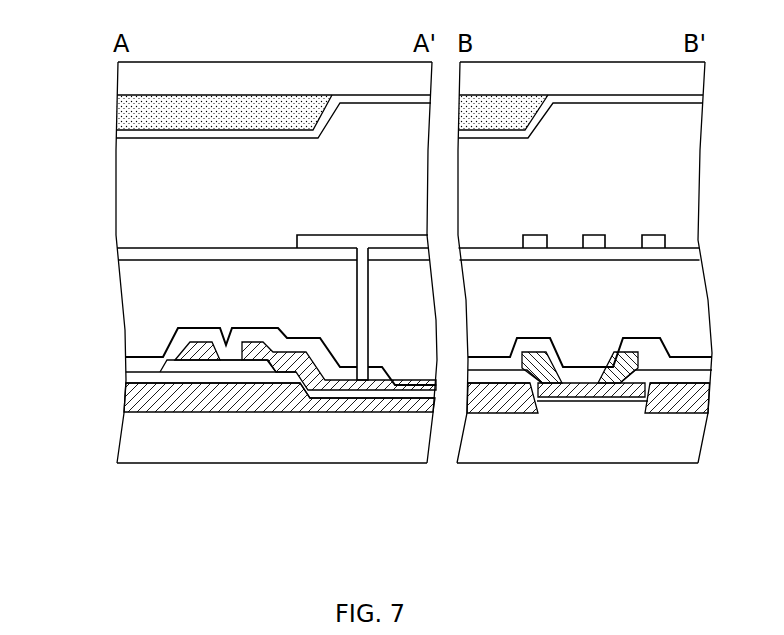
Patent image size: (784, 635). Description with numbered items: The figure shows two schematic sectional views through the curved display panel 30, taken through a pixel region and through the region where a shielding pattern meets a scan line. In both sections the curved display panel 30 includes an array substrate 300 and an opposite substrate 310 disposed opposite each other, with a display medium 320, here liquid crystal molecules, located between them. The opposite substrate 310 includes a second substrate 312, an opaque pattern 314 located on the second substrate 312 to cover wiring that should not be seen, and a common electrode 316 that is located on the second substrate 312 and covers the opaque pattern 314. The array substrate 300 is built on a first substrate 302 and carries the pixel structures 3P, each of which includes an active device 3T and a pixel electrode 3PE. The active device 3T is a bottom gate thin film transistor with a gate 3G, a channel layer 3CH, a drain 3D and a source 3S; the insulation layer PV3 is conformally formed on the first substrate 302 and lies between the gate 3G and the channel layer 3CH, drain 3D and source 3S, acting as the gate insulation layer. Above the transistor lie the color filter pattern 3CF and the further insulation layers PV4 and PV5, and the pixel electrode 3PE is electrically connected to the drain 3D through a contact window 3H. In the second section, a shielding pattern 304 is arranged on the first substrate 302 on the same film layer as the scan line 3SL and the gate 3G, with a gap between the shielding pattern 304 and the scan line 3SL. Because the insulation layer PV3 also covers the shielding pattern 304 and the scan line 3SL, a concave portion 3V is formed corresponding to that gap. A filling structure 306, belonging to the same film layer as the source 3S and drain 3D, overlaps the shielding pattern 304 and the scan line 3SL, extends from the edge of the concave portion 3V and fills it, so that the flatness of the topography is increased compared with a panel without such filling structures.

The opposite substrate 310 is at (46, 62).
The second substrate 312 is at (135, 77).
The opaque pattern 314 is at (130, 112).
The common electrode 316 is at (128, 136).
The display medium 320 is at (135, 207).
The array substrate 300 is at (44, 248).
The first substrate 302 is at (135, 425).
The shielding pattern 304 is at (700, 405).
The insulation layer PV3 is at (135, 384).
The insulation layer PV4 is at (135, 367).
The insulation layer PV5 is at (135, 253).
The color filter pattern 3CF is at (140, 300).
The pixel structure 3P is at (94, 510).
The active device 3T is at (316, 540).
The source 3S is at (197, 353).
The gate 3G is at (215, 366).
The channel layer 3CH is at (237, 350).
The drain 3D is at (262, 350).
The pixel electrode 3PE is at (372, 235).
The contact window 3H is at (354, 304).
The scan line 3SL is at (487, 400).
The curved display panel 30 is at (536, 403).
The concave portion 3V is at (550, 388).
The filling structure 306 is at (613, 384).